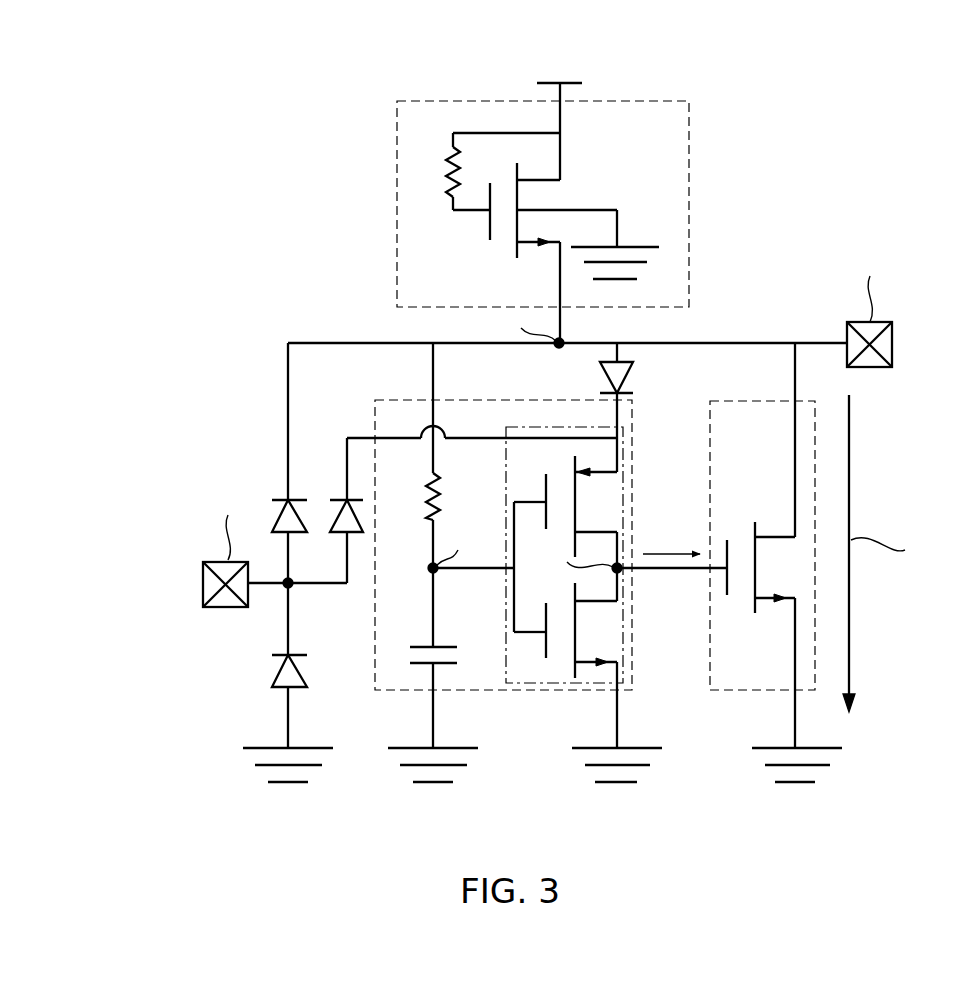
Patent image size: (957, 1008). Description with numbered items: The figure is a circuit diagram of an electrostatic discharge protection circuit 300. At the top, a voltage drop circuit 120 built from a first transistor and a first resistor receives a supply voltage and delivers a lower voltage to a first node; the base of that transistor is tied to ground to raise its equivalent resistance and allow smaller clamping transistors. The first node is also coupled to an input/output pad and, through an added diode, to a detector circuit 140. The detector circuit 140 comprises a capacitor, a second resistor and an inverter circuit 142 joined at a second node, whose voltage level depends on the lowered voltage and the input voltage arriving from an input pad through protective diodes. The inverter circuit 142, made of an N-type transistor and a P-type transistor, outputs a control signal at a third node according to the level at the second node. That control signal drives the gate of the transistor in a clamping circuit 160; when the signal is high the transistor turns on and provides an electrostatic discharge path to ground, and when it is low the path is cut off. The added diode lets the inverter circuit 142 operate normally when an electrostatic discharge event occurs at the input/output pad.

The electrostatic discharge protection circuit 300 is at (150, 68).
The voltage drop circuit 120 is at (397, 210).
The detector circuit 140 is at (375, 418).
The inverter circuit 142 is at (545, 427).
The clamping circuit 160 is at (710, 418).